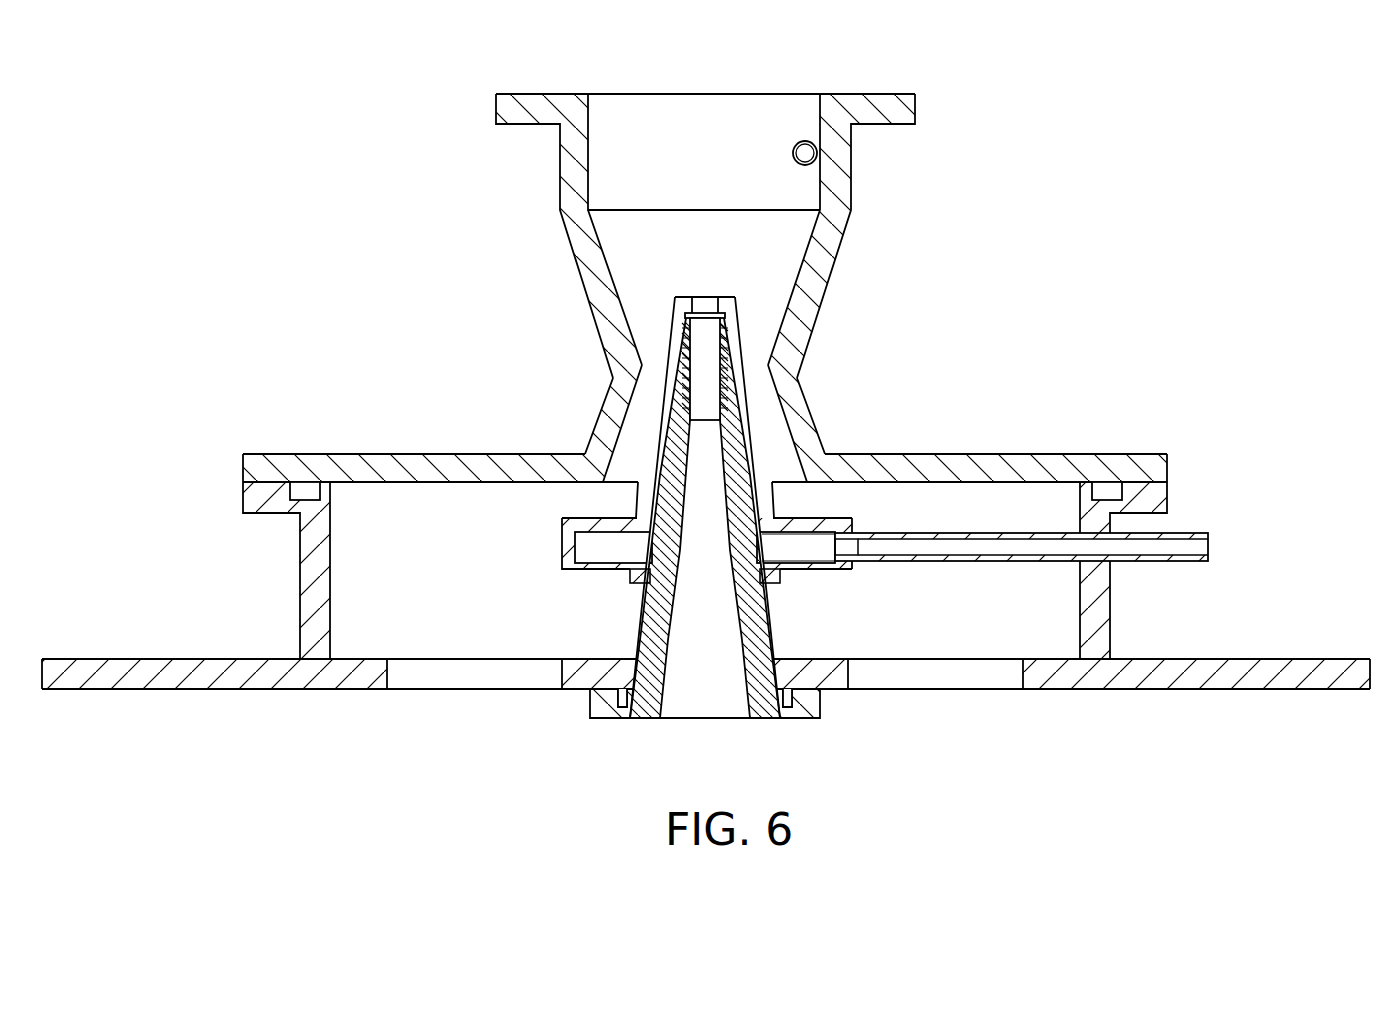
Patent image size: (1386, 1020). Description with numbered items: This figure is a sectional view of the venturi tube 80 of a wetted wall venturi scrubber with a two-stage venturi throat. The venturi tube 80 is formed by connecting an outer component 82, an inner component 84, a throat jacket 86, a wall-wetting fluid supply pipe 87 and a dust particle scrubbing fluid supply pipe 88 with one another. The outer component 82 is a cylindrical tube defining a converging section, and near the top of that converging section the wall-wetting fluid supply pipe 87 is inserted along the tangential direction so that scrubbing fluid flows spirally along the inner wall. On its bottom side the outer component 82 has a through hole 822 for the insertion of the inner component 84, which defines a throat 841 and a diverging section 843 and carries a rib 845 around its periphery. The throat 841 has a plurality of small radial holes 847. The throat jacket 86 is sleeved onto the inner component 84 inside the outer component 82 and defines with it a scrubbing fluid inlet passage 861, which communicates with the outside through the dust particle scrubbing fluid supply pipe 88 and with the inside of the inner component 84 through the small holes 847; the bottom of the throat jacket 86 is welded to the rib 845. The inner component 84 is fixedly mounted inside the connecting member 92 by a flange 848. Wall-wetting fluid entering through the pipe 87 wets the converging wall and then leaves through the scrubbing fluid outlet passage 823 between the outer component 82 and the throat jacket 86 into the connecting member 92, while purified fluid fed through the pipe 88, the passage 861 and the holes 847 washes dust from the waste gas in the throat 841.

The venturi tube 80 is at (337, 178).
The outer component 82 is at (576, 226).
The through hole 822 is at (792, 447).
The scrubbing fluid outlet passage 823 is at (620, 465).
The inner component 84 is at (929, 258).
The throat 841 is at (713, 348).
The diverging section 843 is at (722, 442).
The rib 845 is at (632, 583).
The small radial holes 847 is at (678, 442).
The flange 848 is at (599, 710).
The throat jacket 86 is at (853, 522).
The scrubbing fluid inlet passage 861 is at (685, 380).
The wall-wetting fluid supply pipe 87 is at (806, 140).
The dust particle scrubbing fluid supply pipe 88 is at (1187, 530).
The connecting member 92 is at (303, 585).